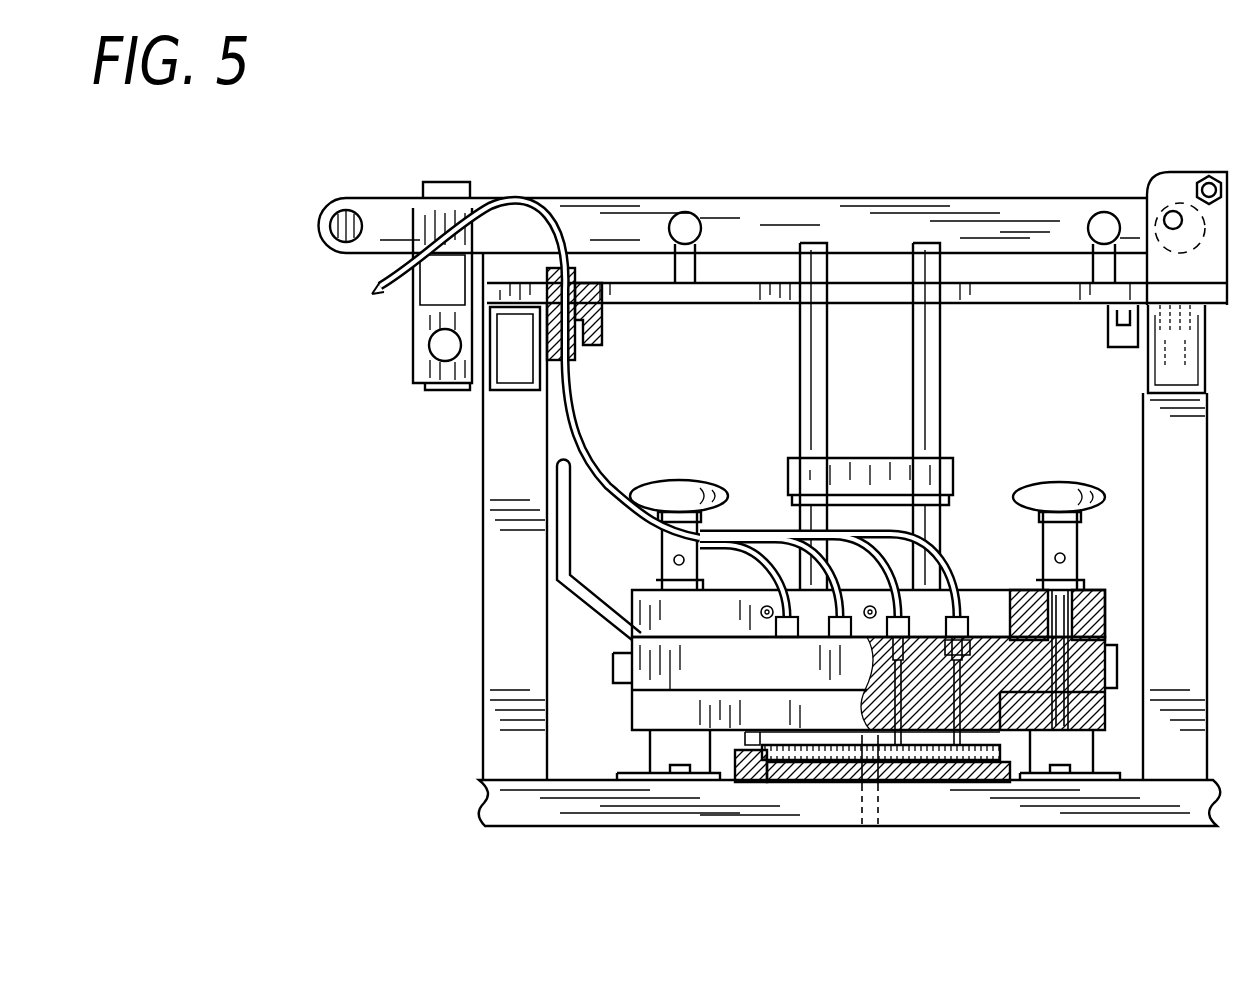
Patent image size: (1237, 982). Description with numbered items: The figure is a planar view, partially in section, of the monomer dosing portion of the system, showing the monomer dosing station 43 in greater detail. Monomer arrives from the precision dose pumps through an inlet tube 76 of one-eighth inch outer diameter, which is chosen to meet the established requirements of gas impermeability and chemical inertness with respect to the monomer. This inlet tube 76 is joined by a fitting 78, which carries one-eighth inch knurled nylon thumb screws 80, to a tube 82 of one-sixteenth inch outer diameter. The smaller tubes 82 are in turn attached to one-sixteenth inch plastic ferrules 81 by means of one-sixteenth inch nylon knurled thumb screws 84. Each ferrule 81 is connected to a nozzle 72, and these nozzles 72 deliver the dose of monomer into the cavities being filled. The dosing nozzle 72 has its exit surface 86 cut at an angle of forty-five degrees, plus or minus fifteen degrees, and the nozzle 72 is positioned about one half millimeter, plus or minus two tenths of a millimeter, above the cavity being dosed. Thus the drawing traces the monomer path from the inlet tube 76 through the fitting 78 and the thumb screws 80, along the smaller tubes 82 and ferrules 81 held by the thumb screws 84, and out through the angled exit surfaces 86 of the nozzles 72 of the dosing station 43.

The monomer dosing station 43 is at (1047, 120).
The inlet tube 76 is at (368, 270).
The fitting 78 is at (543, 327).
The knurled nylon thumb screws 80 is at (584, 348).
The tube 82 is at (583, 467).
The nylon knurled thumb screws 84 is at (960, 637).
The plastic ferrule 81 is at (964, 645).
The exit surface 86 is at (835, 745).
The nozzle 72 is at (932, 742).